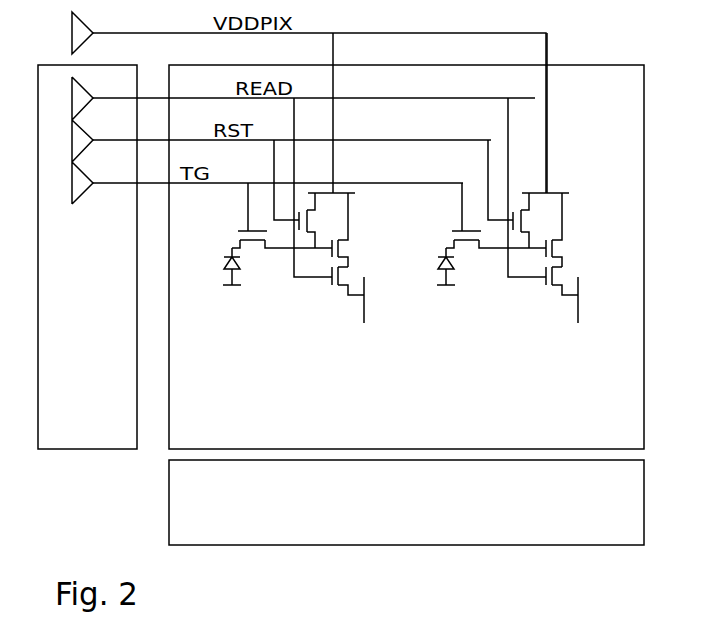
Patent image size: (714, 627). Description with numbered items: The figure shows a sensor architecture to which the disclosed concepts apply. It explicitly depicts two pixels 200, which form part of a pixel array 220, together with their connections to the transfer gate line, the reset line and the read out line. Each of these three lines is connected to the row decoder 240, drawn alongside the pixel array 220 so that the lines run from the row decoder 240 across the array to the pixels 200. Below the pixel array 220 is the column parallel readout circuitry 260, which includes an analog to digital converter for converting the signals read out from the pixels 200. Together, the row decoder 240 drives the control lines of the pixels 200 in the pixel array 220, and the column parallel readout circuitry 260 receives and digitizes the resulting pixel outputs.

The pixel 200 is at (267, 267).
The pixel array 220 is at (406, 241).
The row decoder 240 is at (286, 257).
The column parallel readout circuitry 260 is at (406, 502).